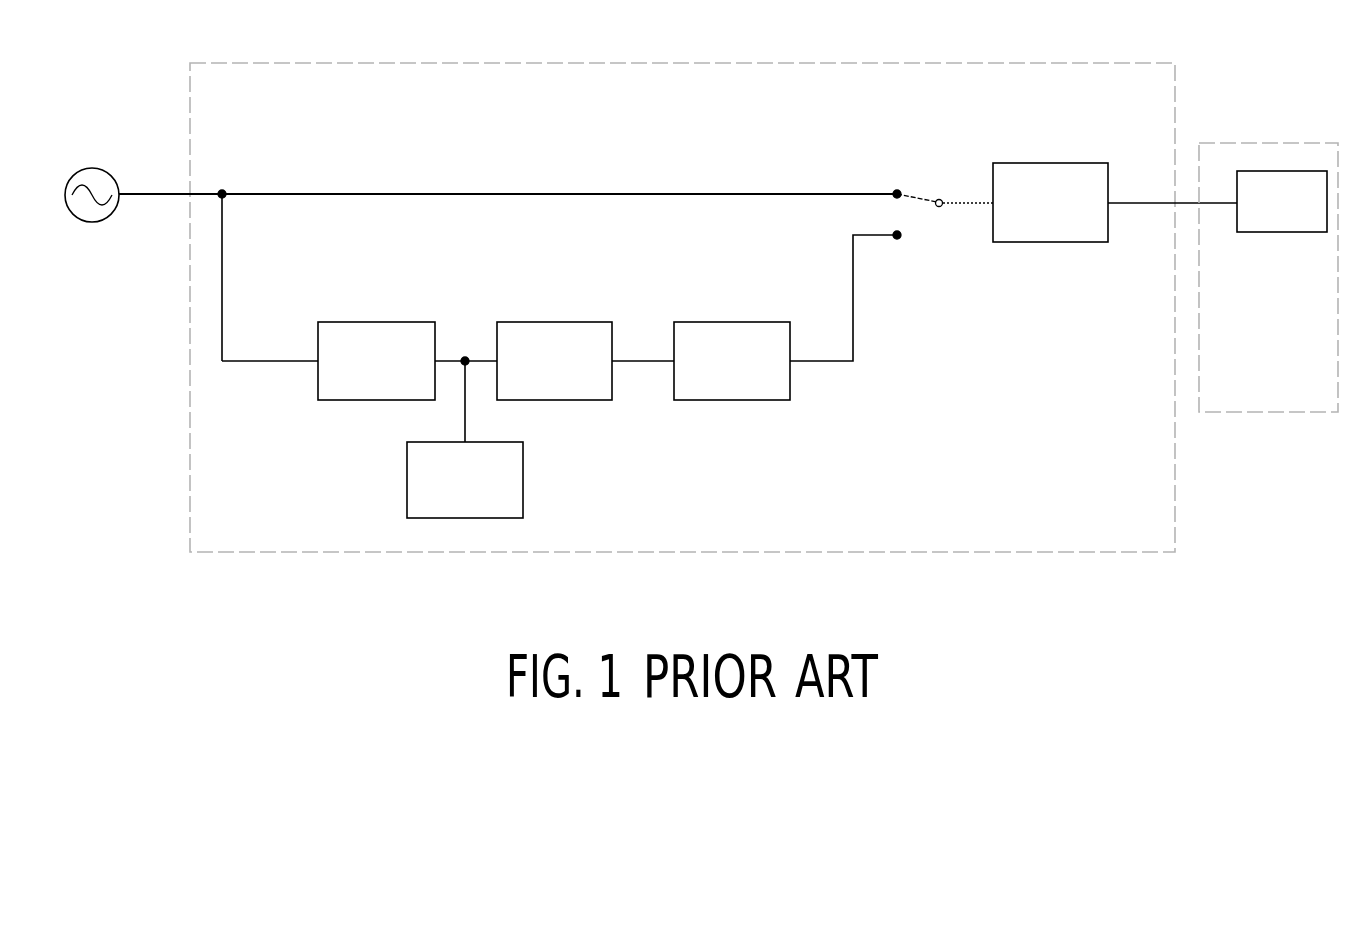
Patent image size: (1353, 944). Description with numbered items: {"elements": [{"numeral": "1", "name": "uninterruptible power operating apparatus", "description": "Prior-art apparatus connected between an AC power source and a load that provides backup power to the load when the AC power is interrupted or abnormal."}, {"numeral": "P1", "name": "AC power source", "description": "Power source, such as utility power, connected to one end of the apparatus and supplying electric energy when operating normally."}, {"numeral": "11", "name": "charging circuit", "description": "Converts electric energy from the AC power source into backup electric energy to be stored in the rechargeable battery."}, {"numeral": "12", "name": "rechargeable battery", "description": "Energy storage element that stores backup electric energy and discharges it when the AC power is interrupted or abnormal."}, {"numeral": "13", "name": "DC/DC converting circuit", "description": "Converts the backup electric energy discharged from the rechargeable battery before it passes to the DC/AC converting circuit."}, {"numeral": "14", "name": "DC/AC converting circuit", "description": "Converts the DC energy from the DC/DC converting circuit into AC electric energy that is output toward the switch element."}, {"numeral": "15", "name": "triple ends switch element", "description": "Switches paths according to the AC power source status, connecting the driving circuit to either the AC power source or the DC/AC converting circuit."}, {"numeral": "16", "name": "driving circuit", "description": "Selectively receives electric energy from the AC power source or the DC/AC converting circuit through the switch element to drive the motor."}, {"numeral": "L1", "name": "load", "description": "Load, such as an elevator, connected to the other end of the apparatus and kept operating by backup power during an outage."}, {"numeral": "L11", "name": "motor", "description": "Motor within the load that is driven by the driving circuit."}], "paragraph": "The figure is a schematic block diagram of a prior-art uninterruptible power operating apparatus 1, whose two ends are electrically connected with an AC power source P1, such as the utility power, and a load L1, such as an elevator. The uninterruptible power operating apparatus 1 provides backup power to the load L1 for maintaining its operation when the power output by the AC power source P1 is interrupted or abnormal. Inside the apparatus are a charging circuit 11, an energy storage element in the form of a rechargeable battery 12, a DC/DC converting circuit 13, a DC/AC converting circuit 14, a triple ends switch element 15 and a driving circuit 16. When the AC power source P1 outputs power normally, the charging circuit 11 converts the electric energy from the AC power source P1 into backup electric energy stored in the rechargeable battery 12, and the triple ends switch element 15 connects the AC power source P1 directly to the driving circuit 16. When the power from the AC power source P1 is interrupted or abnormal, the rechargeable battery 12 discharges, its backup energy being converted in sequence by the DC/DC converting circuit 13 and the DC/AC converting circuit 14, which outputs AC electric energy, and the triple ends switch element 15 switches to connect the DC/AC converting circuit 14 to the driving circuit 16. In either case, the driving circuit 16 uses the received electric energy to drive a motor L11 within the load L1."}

The uninterruptible power supply system (prior art) 1 is at (1150, 63).
The AC power source P1 is at (90, 168).
The AC/DC converter 11 is at (377, 322).
The battery 12 is at (523, 473).
The DC/AC inverter 13 is at (552, 322).
The filter 14 is at (730, 322).
The switch 15 is at (909, 182).
The transformer 16 is at (1050, 163).
The load L1 is at (1268, 143).
The load device L11 is at (1280, 232).